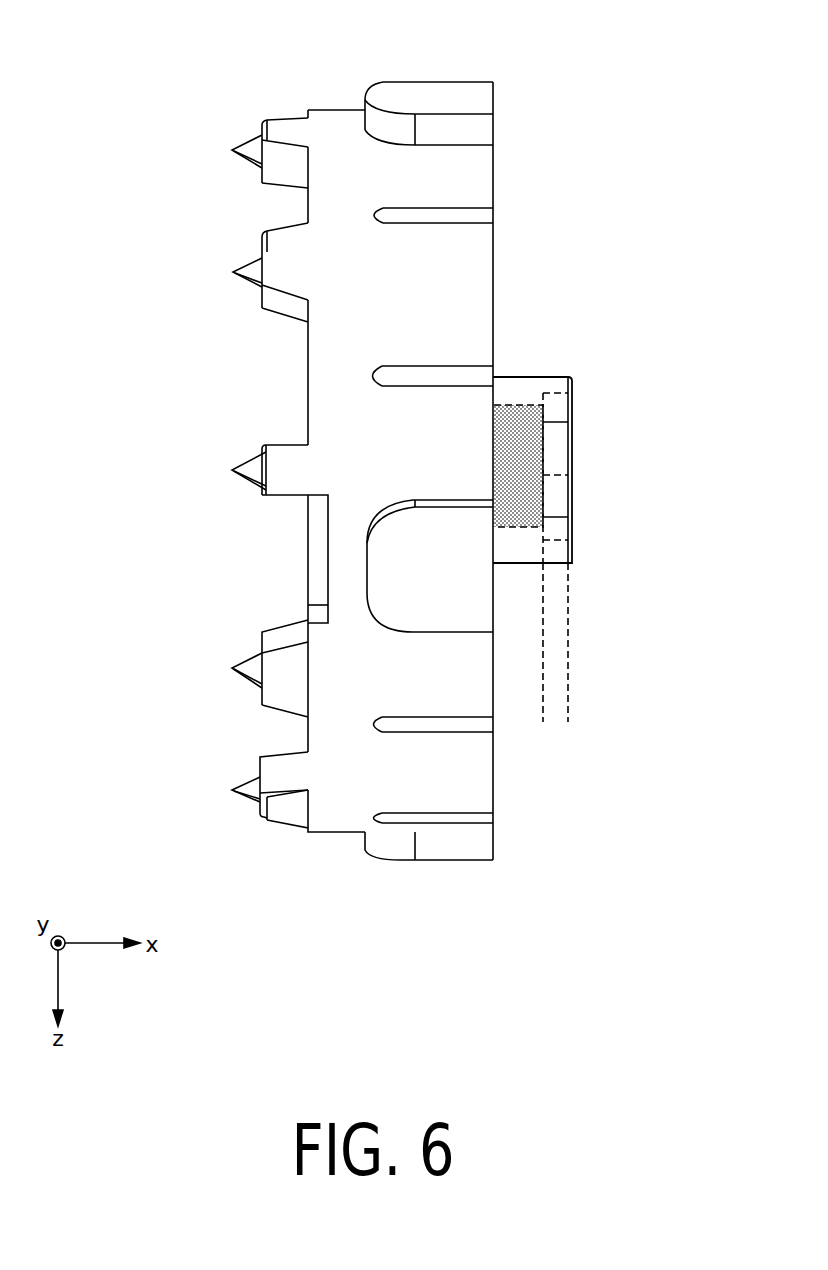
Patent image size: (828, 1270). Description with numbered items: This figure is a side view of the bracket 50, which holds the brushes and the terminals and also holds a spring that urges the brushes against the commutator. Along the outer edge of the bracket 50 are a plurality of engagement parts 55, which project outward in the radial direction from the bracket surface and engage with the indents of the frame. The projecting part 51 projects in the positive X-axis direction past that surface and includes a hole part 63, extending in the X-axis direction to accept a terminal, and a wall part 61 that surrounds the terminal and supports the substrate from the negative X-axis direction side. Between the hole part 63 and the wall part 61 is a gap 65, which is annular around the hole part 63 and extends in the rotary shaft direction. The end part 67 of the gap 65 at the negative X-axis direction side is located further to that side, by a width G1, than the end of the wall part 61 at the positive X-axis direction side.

The bracket 50 is at (248, 102).
The engagement part 55 is at (465, 96).
The projecting part 51 is at (708, 281).
The wall part 61 is at (535, 376).
The hole part 63 is at (509, 425).
The gap 65 is at (556, 393).
The end part of the gap 67 is at (568, 475).
The width G1 is at (507, 687).